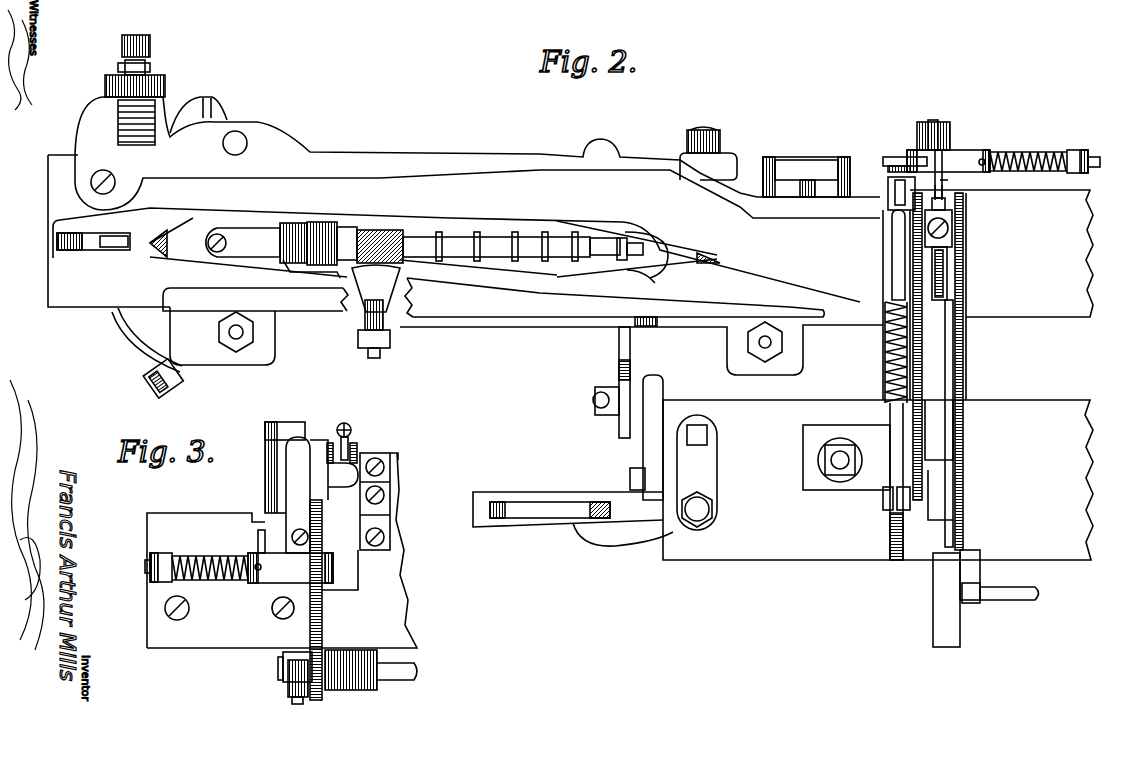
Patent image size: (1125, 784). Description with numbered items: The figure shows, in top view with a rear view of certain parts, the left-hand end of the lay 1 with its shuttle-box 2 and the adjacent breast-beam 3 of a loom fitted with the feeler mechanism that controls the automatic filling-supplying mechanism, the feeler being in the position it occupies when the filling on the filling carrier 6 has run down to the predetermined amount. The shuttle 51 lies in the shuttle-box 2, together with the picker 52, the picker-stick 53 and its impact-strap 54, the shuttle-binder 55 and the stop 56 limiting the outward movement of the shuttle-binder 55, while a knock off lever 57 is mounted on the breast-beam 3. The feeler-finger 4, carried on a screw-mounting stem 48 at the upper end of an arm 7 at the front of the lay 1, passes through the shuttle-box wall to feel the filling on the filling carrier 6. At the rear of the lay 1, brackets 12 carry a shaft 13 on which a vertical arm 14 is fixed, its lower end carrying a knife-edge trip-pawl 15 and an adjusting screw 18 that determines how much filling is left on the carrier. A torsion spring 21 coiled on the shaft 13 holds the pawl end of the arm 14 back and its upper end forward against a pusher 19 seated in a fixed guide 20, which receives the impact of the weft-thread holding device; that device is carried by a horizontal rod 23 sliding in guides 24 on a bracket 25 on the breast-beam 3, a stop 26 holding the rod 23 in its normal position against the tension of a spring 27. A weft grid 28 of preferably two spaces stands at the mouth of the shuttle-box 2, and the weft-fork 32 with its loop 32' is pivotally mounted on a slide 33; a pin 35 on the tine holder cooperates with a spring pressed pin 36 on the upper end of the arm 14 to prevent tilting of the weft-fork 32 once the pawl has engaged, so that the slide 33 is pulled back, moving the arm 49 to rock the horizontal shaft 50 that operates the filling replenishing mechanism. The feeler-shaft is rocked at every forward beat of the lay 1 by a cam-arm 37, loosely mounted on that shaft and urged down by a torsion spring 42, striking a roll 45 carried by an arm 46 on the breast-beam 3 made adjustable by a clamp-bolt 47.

In FIG. 2, the lay 1 is at (1036, 240).
In FIG. 3, the lay 1 is at (382, 590).
In FIG. 2, the shuttle-box 2 is at (480, 305).
In FIG. 2, the breast-beam 3 is at (878, 480).
In FIG. 2, the feeler-finger 4 is at (376, 288).
In FIG. 2, the filling carrier 6 is at (428, 240).
In FIG. 2, the arm 7 is at (358, 340).
In FIG. 2, the brackets 12 is at (975, 143).
In FIG. 3, the brackets 12 is at (155, 556).
In FIG. 2, the shaft 13 is at (1100, 162).
In FIG. 3, the shaft 13 is at (145, 566).
In FIG. 3, the arm 14 is at (324, 616).
In FIG. 2, the knife-edge trip-pawl 15 is at (940, 122).
In FIG. 3, the knife-edge trip-pawl 15 is at (285, 682).
In FIG. 3, the adjusting screw 18 is at (296, 703).
In FIG. 2, the pusher 19 is at (888, 163).
In FIG. 2, the fixed guide 20 is at (888, 186).
In FIG. 2, the spring 21 is at (1025, 150).
In FIG. 3, the spring 21 is at (203, 556).
In FIG. 2, the horizontal rod 23 is at (892, 258).
In FIG. 3, the horizontal rod 23 is at (360, 458).
In FIG. 2, the guides 24 is at (883, 493).
In FIG. 2, the bracket 25 is at (963, 362).
In FIG. 2, the stop 26 is at (895, 550).
In FIG. 2, the spring 27 is at (892, 345).
In FIG. 3, the spring 27 is at (350, 430).
In FIG. 2, the grid 28 is at (947, 204).
In FIG. 3, the grid 28 is at (280, 425).
In FIG. 2, the weft-fork 32 is at (960, 228).
In FIG. 2, the loop 32' is at (965, 273).
In FIG. 2, the slide 33 is at (963, 297).
In FIG. 2, the pin 35 is at (950, 210).
In FIG. 2, the spring pressed pin 36 is at (947, 197).
In FIG. 2, the cam-arm 37 is at (622, 350).
In FIG. 2, the torsion spring 42 is at (632, 322).
In FIG. 2, the roll 45 is at (605, 410).
In FIG. 2, the arm 46 is at (645, 445).
In FIG. 2, the clamp-bolt 47 is at (630, 477).
In FIG. 2, the screw-mounting stem 48 is at (378, 358).
In FIG. 2, the arm 49 is at (975, 566).
In FIG. 2, the horizontal shaft 50 is at (992, 598).
In FIG. 2, the shuttle 51 is at (248, 247).
In FIG. 2, the picker 52 is at (110, 250).
In FIG. 2, the picker-stick 53 is at (57, 242).
In FIG. 2, the impact-strap 54 is at (140, 328).
In FIG. 2, the shuttle-binder 55 is at (477, 126).
In FIG. 2, the stop 56 is at (717, 155).
In FIG. 2, the knock off lever 57 is at (622, 542).